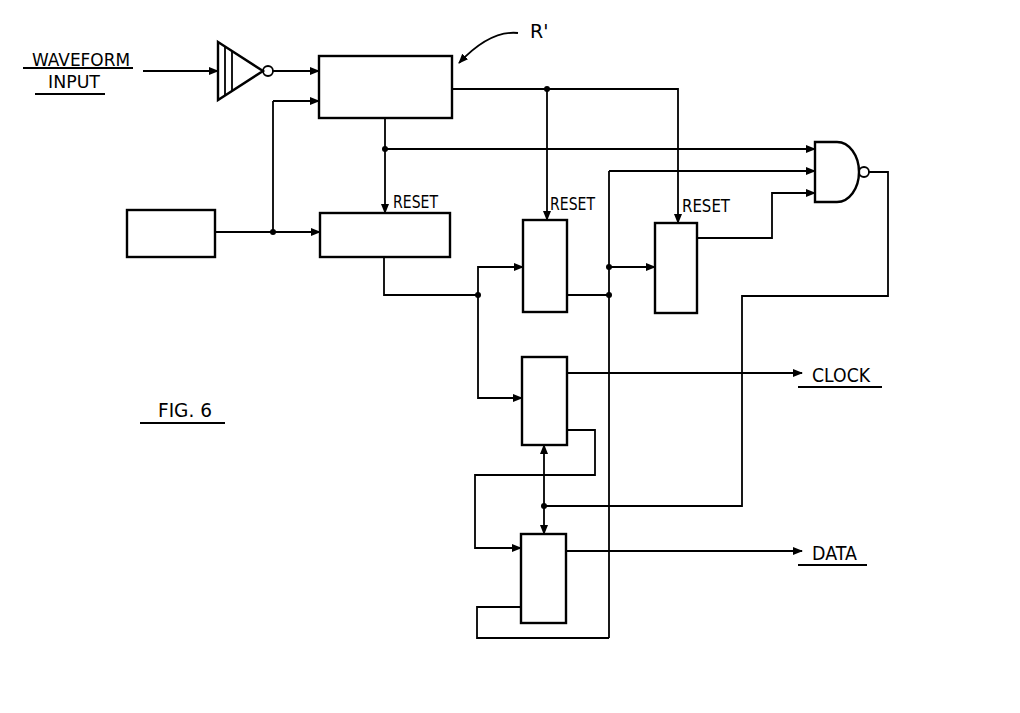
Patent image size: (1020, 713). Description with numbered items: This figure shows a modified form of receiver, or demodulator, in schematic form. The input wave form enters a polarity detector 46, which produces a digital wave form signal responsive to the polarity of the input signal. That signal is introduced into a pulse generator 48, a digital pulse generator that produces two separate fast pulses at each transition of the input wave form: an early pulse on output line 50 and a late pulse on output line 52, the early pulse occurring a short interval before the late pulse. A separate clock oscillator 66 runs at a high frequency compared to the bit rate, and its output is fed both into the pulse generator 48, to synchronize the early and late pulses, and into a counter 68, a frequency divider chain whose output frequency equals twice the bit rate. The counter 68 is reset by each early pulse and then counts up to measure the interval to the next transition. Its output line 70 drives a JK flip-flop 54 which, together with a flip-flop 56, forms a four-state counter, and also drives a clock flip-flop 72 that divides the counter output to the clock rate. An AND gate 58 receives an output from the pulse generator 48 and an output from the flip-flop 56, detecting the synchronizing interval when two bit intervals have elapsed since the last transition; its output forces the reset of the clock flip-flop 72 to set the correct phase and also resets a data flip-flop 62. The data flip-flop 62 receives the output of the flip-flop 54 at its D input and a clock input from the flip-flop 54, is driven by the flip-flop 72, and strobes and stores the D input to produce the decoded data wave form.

The polarity detector 46 is at (250, 73).
The pulse generator 48 is at (333, 110).
The output line 50 is at (383, 170).
The output line 52 is at (523, 92).
The JK flip-flop 54 is at (513, 220).
The flip-flop 56 is at (688, 295).
The AND gate 58 is at (823, 160).
The data flip-flop 62 is at (533, 578).
The clock oscillator 66 is at (157, 217).
The counter 68 is at (340, 248).
The output line 70 is at (422, 297).
The clock flip-flop 72 is at (552, 358).